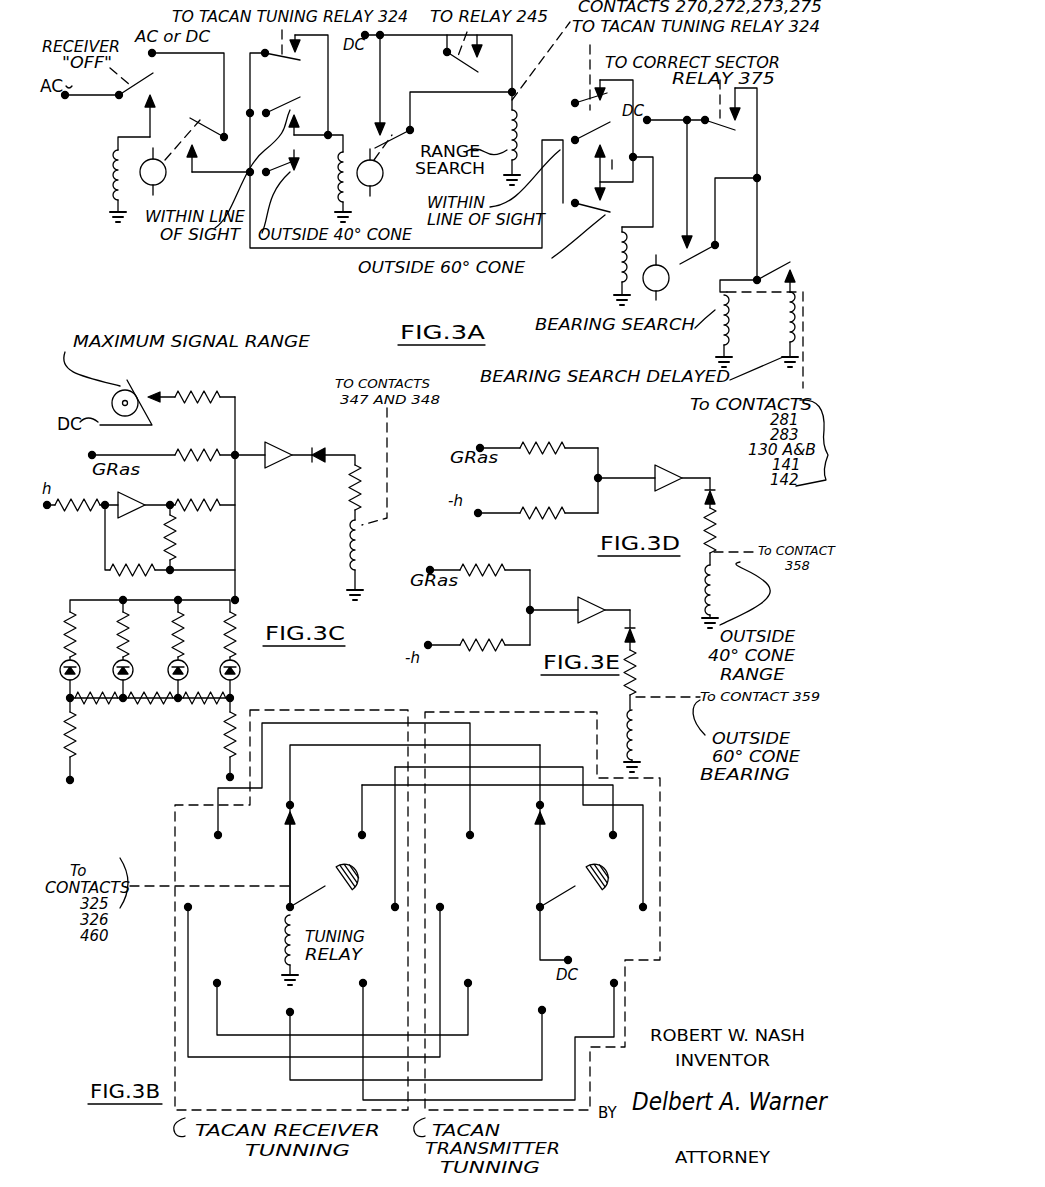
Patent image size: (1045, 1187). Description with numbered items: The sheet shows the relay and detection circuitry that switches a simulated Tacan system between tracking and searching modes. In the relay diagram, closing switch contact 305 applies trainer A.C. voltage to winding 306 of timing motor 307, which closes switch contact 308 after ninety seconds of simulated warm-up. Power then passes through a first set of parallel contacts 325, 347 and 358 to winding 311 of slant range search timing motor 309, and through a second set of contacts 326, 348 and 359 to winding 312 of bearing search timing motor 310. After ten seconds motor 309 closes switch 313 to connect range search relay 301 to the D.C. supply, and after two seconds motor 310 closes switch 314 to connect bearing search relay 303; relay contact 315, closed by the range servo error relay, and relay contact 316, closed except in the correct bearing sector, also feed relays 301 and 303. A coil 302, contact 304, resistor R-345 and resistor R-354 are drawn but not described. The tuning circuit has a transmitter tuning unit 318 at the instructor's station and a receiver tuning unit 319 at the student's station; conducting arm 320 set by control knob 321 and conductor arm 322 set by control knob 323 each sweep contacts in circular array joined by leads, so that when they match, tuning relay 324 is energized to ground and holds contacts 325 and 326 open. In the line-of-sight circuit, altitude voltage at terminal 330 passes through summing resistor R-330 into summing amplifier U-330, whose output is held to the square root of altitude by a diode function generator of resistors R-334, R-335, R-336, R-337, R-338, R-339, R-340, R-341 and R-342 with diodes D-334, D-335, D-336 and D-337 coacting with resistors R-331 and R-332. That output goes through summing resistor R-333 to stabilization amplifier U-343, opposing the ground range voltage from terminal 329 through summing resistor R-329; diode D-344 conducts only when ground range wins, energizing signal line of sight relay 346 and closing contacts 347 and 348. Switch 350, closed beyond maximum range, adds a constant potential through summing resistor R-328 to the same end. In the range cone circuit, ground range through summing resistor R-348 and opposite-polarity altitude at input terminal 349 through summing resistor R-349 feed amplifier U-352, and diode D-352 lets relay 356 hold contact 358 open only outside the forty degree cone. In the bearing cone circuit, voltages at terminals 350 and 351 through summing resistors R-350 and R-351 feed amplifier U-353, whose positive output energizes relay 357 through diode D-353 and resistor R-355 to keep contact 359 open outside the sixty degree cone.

In FIG. 3A, the range search relay 301 is at (505, 130).
In FIG. 3A, the bearing search delayed relay coil 302 is at (784, 339).
In FIG. 3A, the bearing search relay 303 is at (715, 335).
In FIG. 3A, the switch contact 304 is at (776, 270).
In FIG. 3A, the switch contact 305 is at (155, 78).
In FIG. 3A, the winding 306 is at (112, 188).
In FIG. 3A, the timing motor 307 is at (160, 185).
In FIG. 3A, the switch contact 308 is at (192, 118).
In FIG. 3A, the slant range search timing motor 309 is at (375, 190).
In FIG. 3A, the bearing search timing motor 310 is at (666, 290).
In FIG. 3A, the winding 311 is at (336, 191).
In FIG. 3A, the winding 312 is at (614, 264).
In FIG. 3A, the switch 313 is at (388, 170).
In FIG. 3A, the switch 314 is at (686, 264).
In FIG. 3A, the relay contact 315 is at (443, 62).
In FIG. 3A, the relay contact 316 is at (708, 116).
In FIG. 3A, the relay contact 325 is at (302, 60).
In FIG. 3A, the relay contact 326 is at (576, 94).
In FIG. 3A, the relay contact 347 is at (286, 106).
In FIG. 3A, the relay contact 348 is at (588, 127).
In FIG. 3D, the relay contact 348 is at (494, 432).
In FIG. 3A, the contact 358 is at (298, 165).
In FIG. 3A, the contact 359 is at (602, 214).
In FIG. 3B, the transmitter tuning unit 318 is at (519, 708).
In FIG. 3B, the receiver tuning unit 319 is at (354, 708).
In FIG. 3B, the conducting arm 320 is at (538, 874).
In FIG. 3B, the control knob 321 is at (611, 876).
In FIG. 3B, the conductor arm 322 is at (284, 874).
In FIG. 3B, the control knob 323 is at (368, 876).
In FIG. 3B, the tuning relay 324 is at (269, 950).
In FIG. 3C, the terminal 329 is at (92, 453).
In FIG. 3C, the terminal 330 is at (54, 518).
In FIG. 3C, the signal line of sight relay 346 is at (346, 544).
In FIG. 3C, the switch 350 is at (142, 400).
In FIG. 3E, the switch 350 is at (419, 570).
In FIG. 3C, the summing resistor R-328 is at (220, 392).
In FIG. 3C, the summing resistor R-329 is at (214, 452).
In FIG. 3C, the summing resistor R-330 is at (104, 500).
In FIG. 3C, the summing amplifier U-330 is at (154, 488).
In FIG. 3C, the resistor R-331 is at (160, 566).
In FIG. 3C, the resistor R-332 is at (178, 542).
In FIG. 3C, the summing resistor R-333 is at (195, 515).
In FIG. 3C, the resistor R-334 is at (88, 588).
In FIG. 3C, the resistor R-335 is at (140, 588).
In FIG. 3C, the resistor R-336 is at (196, 590).
In FIG. 3C, the resistor R-337 is at (240, 602).
In FIG. 3C, the diode D-334 is at (80, 668).
In FIG. 3C, the diode D-335 is at (133, 668).
In FIG. 3C, the diode D-336 is at (188, 668).
In FIG. 3C, the diode D-337 is at (240, 668).
In FIG. 3C, the resistor R-338 is at (72, 768).
In FIG. 3C, the resistor R-339 is at (72, 702).
In FIG. 3C, the resistor R-340 is at (134, 702).
In FIG. 3C, the resistor R-341 is at (186, 702).
In FIG. 3C, the resistor R-342 is at (222, 755).
In FIG. 3C, the stabilization amplifier U-343 is at (294, 434).
In FIG. 3C, the diode D-344 is at (338, 446).
In FIG. 3C, the resistor R-345 is at (350, 498).
In FIG. 3D, the input terminal 349 is at (498, 501).
In FIG. 3D, the summing resistor R-348 is at (574, 442).
In FIG. 3D, the summing resistor R-349 is at (584, 508).
In FIG. 3D, the amplifier U-352 is at (692, 457).
In FIG. 3D, the diode D-352 is at (716, 494).
In FIG. 3D, the resistor R-354 is at (716, 528).
In FIG. 3D, the relay 356 is at (718, 582).
In FIG. 3E, the terminal 351 is at (416, 648).
In FIG. 3E, the summing resistor R-350 is at (517, 566).
In FIG. 3E, the summing resistor R-351 is at (510, 640).
In FIG. 3E, the amplifier U-353 is at (590, 600).
In FIG. 3E, the diode D-353 is at (636, 636).
In FIG. 3E, the resistor R-355 is at (636, 672).
In FIG. 3E, the relay 357 is at (648, 724).